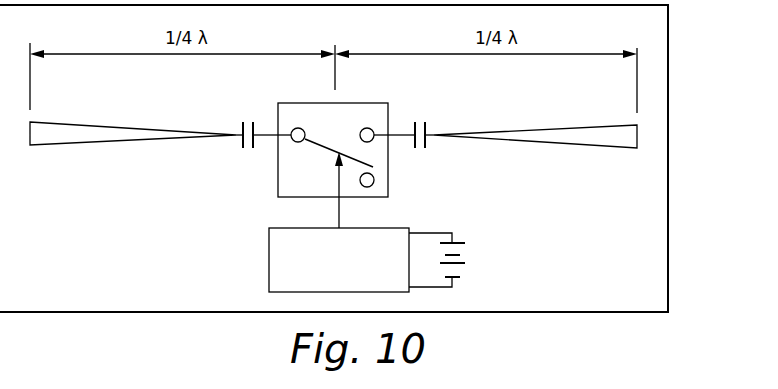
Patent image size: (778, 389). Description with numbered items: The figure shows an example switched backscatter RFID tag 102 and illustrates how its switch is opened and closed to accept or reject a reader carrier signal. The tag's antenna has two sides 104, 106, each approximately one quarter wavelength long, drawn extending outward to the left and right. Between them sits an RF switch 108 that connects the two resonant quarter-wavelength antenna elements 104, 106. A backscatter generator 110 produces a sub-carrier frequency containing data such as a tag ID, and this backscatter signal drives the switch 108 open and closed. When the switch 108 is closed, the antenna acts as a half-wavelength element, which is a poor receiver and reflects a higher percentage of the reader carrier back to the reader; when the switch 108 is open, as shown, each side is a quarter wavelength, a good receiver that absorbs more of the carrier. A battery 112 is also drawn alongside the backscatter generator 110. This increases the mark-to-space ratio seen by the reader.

The switched backscatter RFID tag 102 is at (538, 312).
The antenna side 104 is at (86, 124).
The antenna side 106 is at (596, 125).
The RF switch 108 is at (388, 153).
The backscatter generator 110 is at (269, 261).
The battery 112 is at (470, 260).